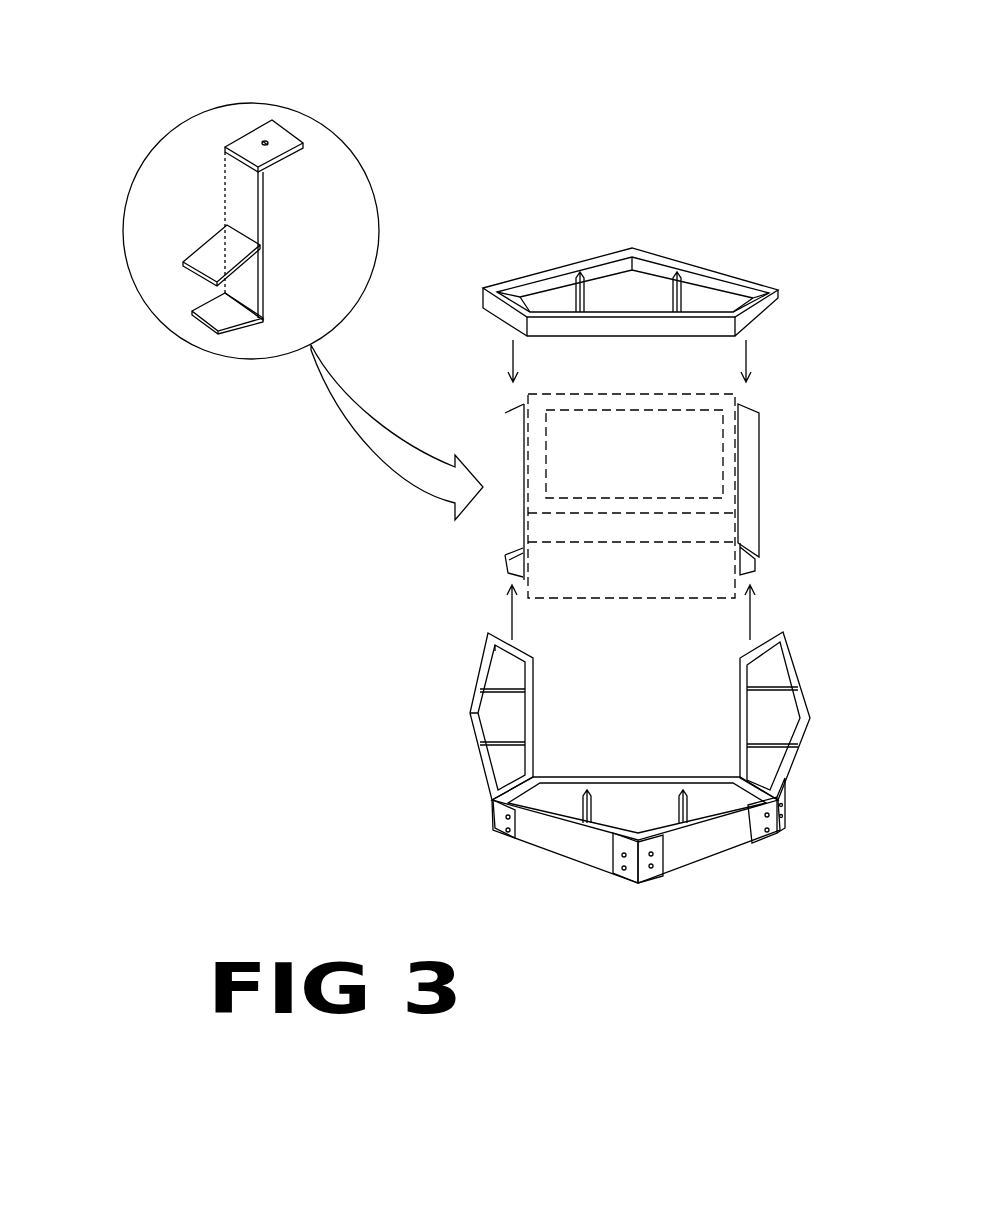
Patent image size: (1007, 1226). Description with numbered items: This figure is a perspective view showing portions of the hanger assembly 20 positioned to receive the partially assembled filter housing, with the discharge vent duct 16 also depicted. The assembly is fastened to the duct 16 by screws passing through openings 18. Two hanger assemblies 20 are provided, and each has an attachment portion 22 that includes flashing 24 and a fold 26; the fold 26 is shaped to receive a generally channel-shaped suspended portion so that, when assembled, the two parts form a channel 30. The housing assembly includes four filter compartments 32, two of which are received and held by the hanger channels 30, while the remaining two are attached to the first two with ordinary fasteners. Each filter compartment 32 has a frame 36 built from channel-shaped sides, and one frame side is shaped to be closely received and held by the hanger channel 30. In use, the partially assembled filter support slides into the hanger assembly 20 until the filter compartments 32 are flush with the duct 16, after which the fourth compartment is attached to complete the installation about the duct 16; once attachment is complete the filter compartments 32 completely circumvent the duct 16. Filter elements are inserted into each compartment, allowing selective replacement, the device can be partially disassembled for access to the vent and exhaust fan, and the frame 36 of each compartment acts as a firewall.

The discharge vent duct 16 is at (645, 390).
The openings 18 is at (263, 140).
The hanger assembly 20 is at (411, 122).
The attachment portion 22 is at (223, 155).
The flashing 24 is at (287, 133).
The fold 26 is at (207, 232).
The channel 30 is at (202, 290).
The filter compartment 32 is at (660, 253).
The frame 36 is at (730, 275).